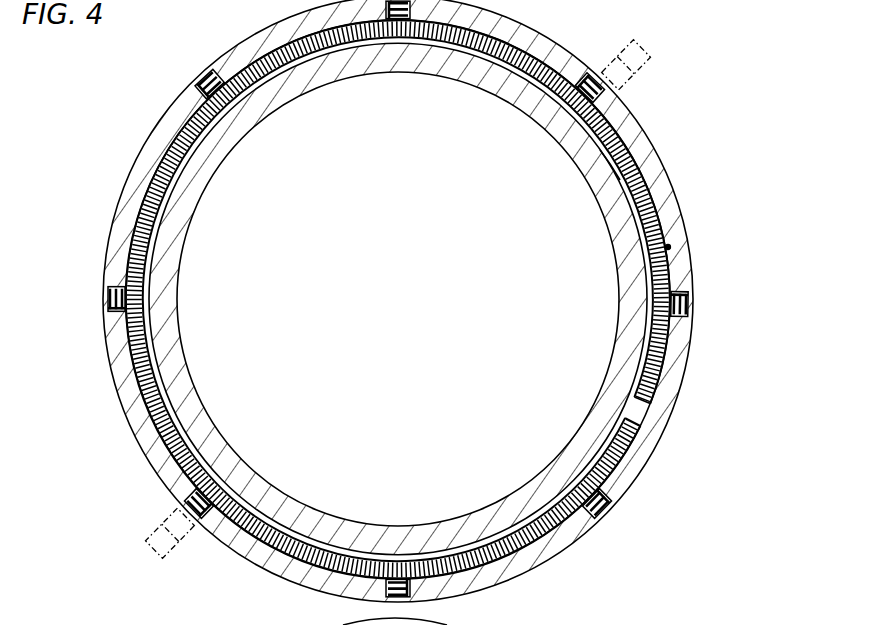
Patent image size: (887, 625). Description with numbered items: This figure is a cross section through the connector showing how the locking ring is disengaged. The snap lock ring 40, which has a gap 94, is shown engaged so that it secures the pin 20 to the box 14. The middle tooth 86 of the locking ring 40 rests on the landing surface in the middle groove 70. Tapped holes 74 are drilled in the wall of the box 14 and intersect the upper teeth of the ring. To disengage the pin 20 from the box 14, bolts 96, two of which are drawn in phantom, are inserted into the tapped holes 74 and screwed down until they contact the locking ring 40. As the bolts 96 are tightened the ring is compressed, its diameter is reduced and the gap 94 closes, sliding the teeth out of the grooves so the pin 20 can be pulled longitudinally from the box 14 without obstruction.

The box 14 is at (544, 37).
The pin 20 is at (458, 67).
The snap lock ring 40 is at (610, 165).
The middle groove 70 is at (670, 247).
The tapped holes 74 is at (108, 299).
The middle tooth 86 is at (650, 212).
The gap 94 is at (650, 400).
The bolts 96 is at (646, 64).